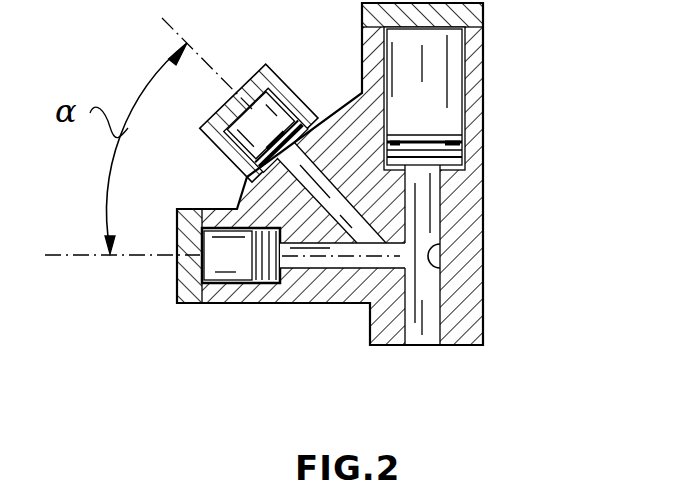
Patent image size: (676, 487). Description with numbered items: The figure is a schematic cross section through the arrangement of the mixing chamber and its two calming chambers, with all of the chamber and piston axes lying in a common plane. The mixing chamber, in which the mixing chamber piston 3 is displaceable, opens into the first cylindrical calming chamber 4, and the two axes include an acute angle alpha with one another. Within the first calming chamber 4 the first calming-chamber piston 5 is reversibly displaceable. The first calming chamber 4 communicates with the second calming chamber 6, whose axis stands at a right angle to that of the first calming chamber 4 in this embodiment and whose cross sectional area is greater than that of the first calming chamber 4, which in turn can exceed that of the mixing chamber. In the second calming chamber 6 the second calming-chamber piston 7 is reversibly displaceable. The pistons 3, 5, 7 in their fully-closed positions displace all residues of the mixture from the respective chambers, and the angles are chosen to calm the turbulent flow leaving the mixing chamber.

The mixing chamber piston 3 is at (317, 160).
The first cylindrical calming chamber 4 is at (302, 268).
The first calming-chamber piston 5 is at (385, 262).
The second calming chamber 6 is at (441, 268).
The second calming-chamber piston 7 is at (437, 199).